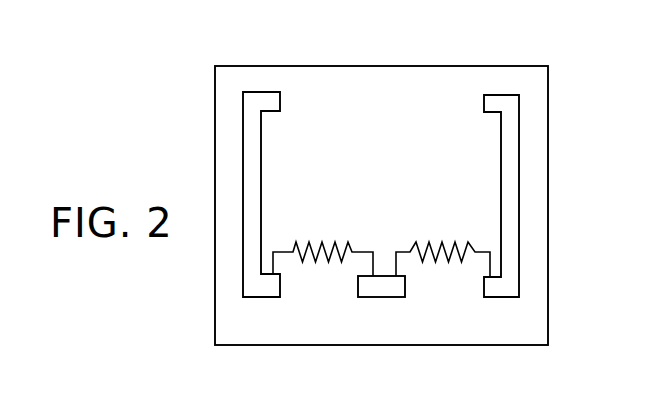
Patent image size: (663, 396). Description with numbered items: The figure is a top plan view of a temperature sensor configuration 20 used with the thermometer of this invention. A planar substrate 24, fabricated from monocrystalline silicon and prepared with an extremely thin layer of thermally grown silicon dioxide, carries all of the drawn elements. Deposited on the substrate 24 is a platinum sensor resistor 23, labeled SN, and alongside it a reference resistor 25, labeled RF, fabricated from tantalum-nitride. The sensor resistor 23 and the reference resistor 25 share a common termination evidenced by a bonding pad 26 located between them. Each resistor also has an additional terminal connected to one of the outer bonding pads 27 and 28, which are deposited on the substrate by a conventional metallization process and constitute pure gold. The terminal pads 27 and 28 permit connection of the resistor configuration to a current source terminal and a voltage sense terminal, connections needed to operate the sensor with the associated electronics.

The sensor configuration 20 is at (568, 182).
The planar substrate 24 is at (550, 82).
The bonding pad 27 is at (260, 289).
The bonding pad 28 is at (508, 286).
The platinum sensor resistor 23 is at (334, 217).
The reference resistor 25 is at (440, 217).
The bonding pad 26 is at (382, 287).